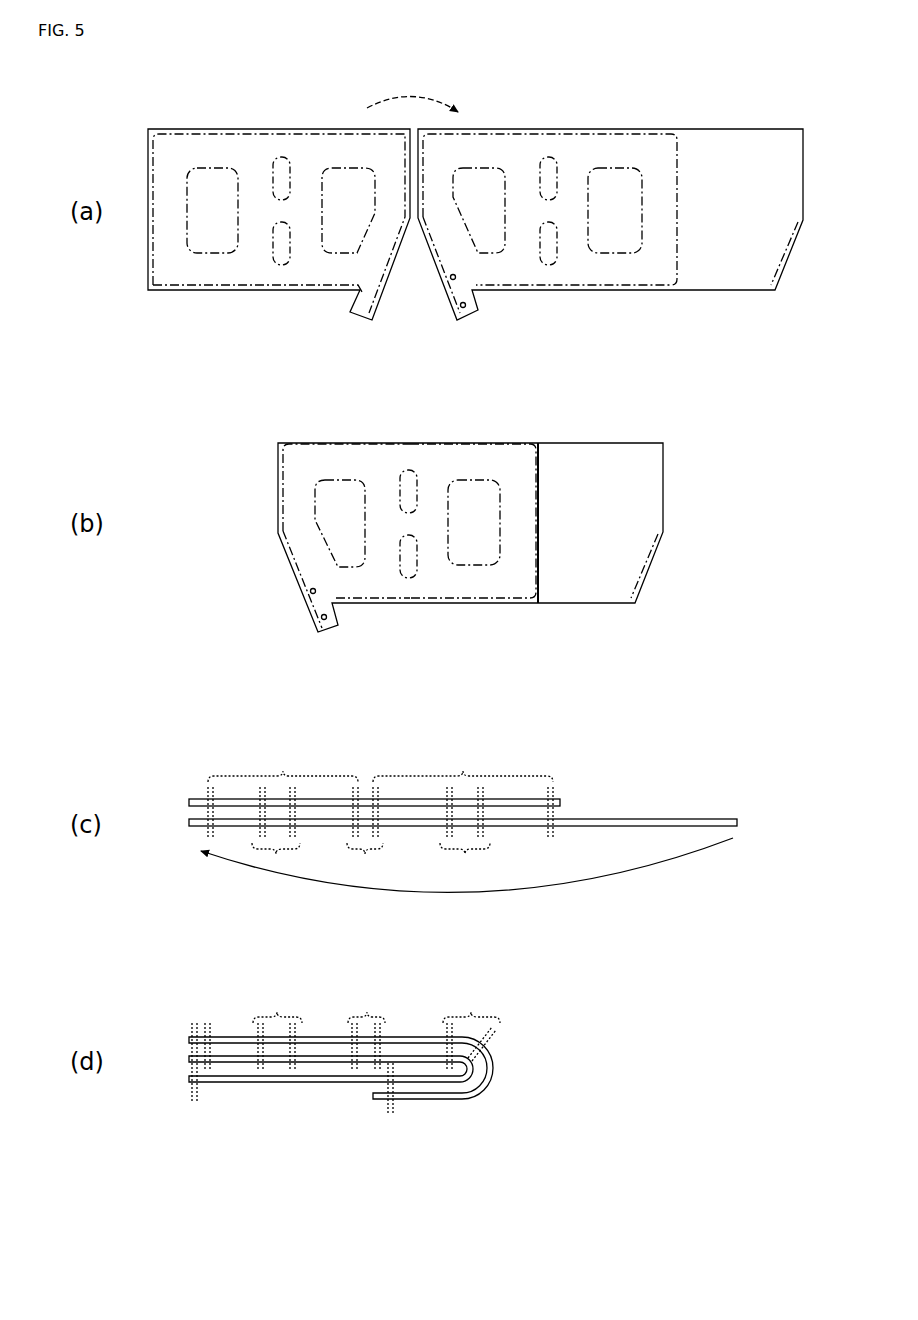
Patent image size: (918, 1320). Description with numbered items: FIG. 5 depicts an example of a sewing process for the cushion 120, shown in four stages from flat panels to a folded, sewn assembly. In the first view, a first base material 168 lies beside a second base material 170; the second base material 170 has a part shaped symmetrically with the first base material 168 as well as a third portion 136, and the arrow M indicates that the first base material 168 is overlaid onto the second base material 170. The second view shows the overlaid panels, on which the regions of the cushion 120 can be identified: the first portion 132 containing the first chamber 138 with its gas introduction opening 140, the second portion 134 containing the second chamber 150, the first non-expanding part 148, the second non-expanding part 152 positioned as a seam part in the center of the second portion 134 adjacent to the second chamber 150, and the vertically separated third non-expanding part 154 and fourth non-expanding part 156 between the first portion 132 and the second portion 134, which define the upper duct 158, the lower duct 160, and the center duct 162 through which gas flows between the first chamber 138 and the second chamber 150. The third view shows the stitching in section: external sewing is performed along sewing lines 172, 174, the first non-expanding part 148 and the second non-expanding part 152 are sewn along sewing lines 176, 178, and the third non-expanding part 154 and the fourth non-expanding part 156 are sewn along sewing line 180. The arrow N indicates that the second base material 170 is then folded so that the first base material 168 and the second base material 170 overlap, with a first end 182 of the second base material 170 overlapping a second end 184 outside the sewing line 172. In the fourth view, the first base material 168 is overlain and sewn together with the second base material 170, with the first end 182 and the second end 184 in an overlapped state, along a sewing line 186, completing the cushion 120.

The cushion 120 is at (494, 1092).
The first portion 132 is at (339, 466).
The second portion 134 is at (469, 462).
The third portion 136 is at (733, 155).
The first chamber 138 is at (300, 452).
The gas introduction opening 140 is at (327, 633).
The first non-expanding part 148 is at (323, 502).
The second chamber 150 is at (513, 455).
The second non-expanding part 152 is at (490, 557).
The third non-expanding part 154 is at (413, 487).
The fourth non-expanding part 156 is at (415, 555).
The upper duct 158 is at (408, 460).
The lower duct 160 is at (408, 590).
The center duct 162 is at (398, 522).
The first base material 168 is at (258, 129).
The second base material 170 is at (575, 129).
The sewing line 172 is at (208, 835).
The sewing line 174 is at (552, 840).
The sewing line 176 is at (277, 928).
The sewing line 178 is at (470, 928).
The sewing line 180 is at (366, 928).
The first end 182 is at (738, 825).
The second end 184 is at (189, 822).
The sewing line 186 is at (195, 1095).
The arrow M is at (410, 95).
The arrow N is at (577, 887).